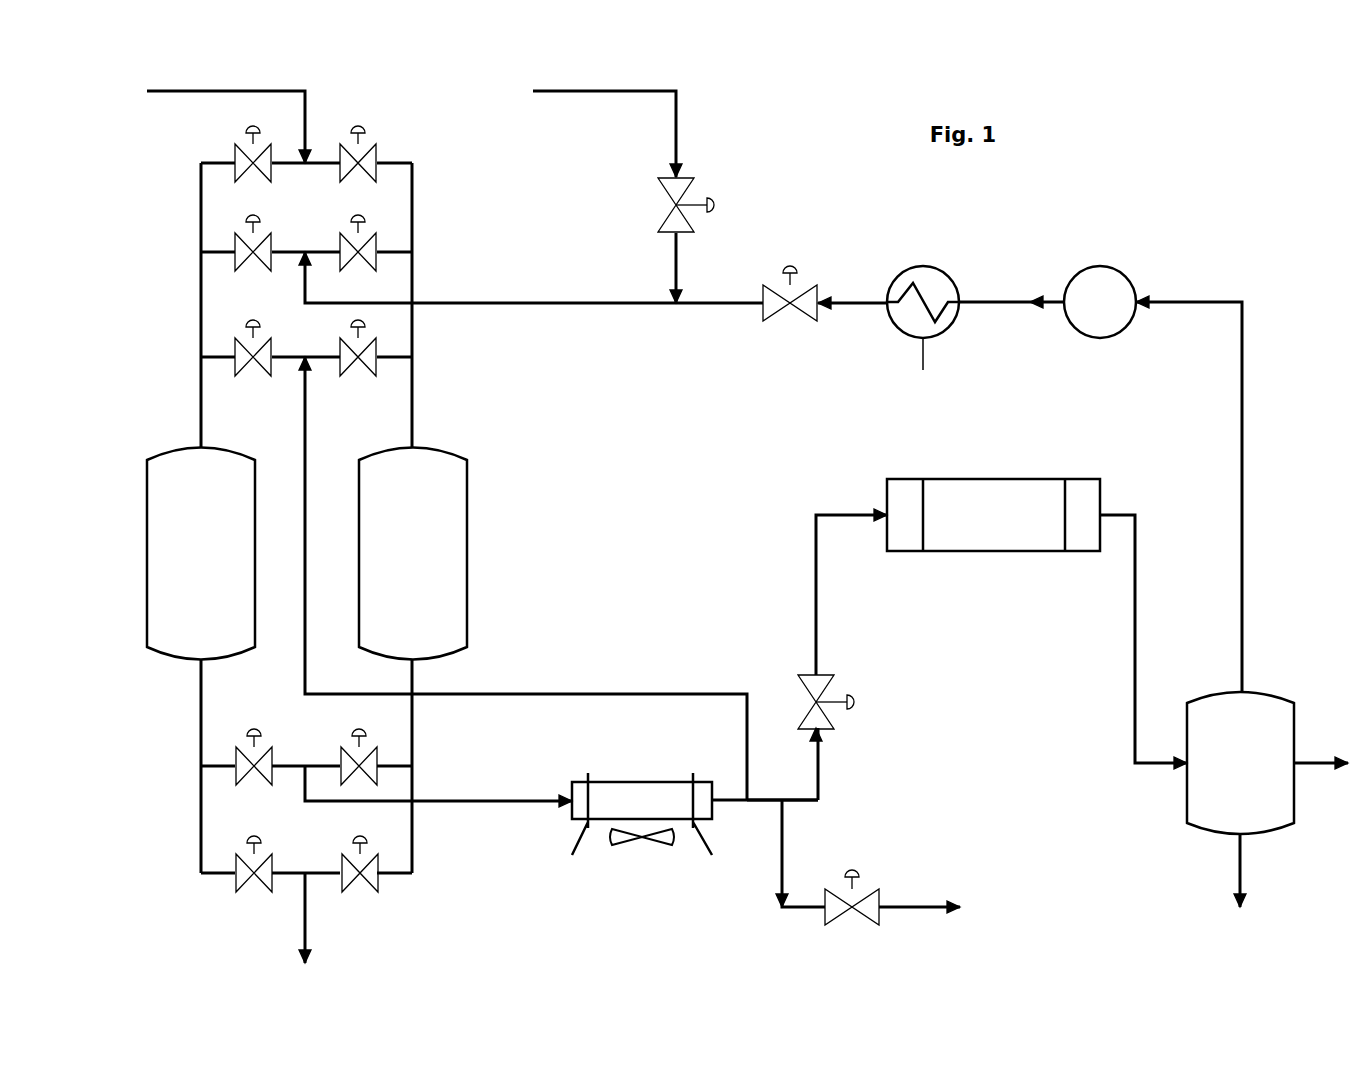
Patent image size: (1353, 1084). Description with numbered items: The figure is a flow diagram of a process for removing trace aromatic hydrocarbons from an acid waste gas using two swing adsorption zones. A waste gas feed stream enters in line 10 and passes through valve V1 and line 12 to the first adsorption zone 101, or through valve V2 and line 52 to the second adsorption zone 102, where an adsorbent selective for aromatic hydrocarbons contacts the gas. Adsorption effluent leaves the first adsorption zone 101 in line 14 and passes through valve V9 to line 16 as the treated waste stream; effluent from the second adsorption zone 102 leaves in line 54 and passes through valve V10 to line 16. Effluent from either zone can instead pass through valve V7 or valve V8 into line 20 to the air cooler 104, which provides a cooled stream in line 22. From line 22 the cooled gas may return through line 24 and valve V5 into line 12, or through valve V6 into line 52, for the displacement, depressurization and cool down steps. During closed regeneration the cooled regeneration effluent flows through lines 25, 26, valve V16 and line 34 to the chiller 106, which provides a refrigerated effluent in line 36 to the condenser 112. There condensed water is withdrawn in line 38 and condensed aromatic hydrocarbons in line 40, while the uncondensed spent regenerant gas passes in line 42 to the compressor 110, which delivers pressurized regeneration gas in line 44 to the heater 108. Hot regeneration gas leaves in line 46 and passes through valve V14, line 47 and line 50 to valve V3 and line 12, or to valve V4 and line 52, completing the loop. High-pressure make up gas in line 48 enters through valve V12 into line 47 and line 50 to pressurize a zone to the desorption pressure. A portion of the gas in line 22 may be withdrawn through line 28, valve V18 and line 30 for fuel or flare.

The line 10 is at (230, 91).
The line 12 is at (201, 270).
The line 14 is at (201, 713).
The line 16 is at (303, 893).
The line 20 is at (505, 801).
The line 22 is at (730, 800).
The line 24 is at (308, 480).
The line 25 is at (767, 800).
The line 26 is at (817, 800).
The line 28 is at (783, 850).
The line 30 is at (945, 913).
The line 34 is at (816, 588).
The line 36 is at (1135, 670).
The line 38 is at (1240, 882).
The line 40 is at (1312, 758).
The line 42 is at (1242, 440).
The line 44 is at (977, 302).
The line 46 is at (870, 303).
The line 47 is at (713, 303).
The line 48 is at (633, 91).
The line 50 is at (600, 303).
The line 52 is at (413, 267).
The line 54 is at (412, 730).
The adsorption zone 101 is at (180, 564).
The adsorption zone 102 is at (392, 564).
The air cooler 104 is at (642, 814).
The chiller 106 is at (973, 526).
The heater 108 is at (923, 334).
The compressor 110 is at (1079, 314).
The condenser 112 is at (1219, 772).
The valve V1 is at (232, 176).
The valve V2 is at (337, 176).
The valve V3 is at (232, 265).
The valve V4 is at (337, 265).
The valve V5 is at (232, 370).
The valve V6 is at (337, 370).
The valve V7 is at (227, 752).
The valve V8 is at (332, 752).
The valve V9 is at (227, 859).
The valve V10 is at (333, 859).
The valve V12 is at (662, 233).
The valve V14 is at (763, 317).
The valve V16 is at (837, 727).
The valve V18 is at (820, 887).